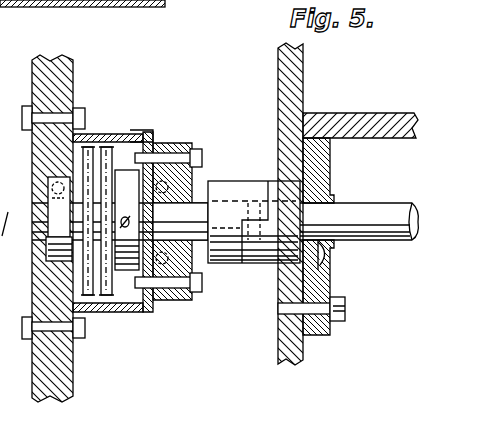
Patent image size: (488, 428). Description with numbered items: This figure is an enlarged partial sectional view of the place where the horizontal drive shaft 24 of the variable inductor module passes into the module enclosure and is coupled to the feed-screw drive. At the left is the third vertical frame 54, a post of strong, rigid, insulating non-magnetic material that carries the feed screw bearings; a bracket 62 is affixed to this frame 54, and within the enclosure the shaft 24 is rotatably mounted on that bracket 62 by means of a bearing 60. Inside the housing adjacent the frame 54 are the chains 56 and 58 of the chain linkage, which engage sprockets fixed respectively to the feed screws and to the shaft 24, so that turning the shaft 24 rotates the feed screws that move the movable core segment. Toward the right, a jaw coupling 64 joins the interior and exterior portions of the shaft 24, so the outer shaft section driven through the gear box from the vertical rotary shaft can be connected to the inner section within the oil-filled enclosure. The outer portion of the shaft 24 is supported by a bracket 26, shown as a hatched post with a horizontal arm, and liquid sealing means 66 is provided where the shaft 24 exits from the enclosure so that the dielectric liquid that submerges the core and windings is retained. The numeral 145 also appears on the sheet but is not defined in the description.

The horizontal drive shaft 24 is at (372, 203).
The bracket 26 is at (338, 113).
The third vertical frame 54 is at (73, 72).
The chain 56 is at (96, 135).
The chain 58 is at (106, 297).
The bearing 60 is at (172, 143).
The bracket 62 is at (128, 128).
The jaw coupling 64 is at (233, 181).
The liquid sealing means 66 is at (326, 262).
The frame post 145 is at (278, 70).